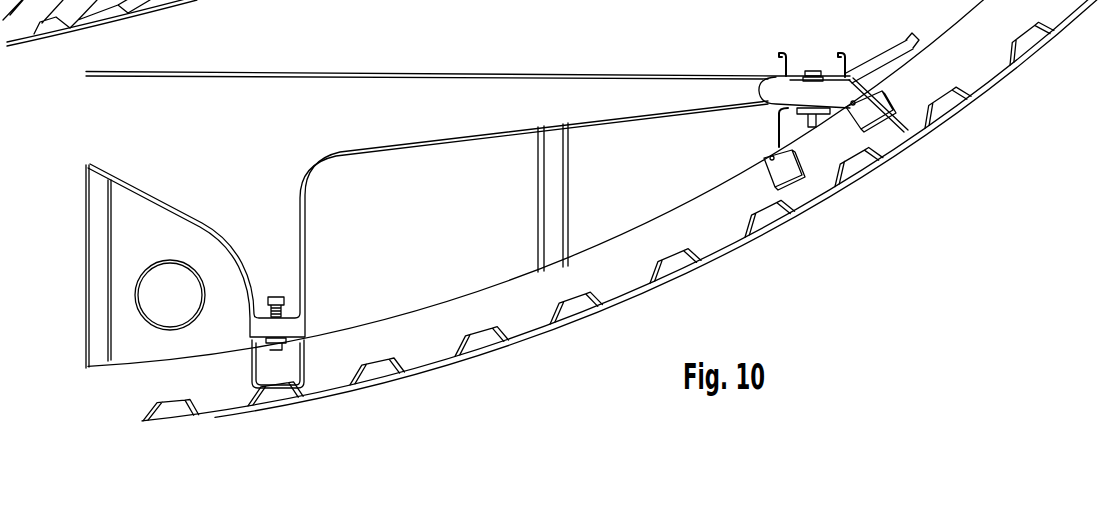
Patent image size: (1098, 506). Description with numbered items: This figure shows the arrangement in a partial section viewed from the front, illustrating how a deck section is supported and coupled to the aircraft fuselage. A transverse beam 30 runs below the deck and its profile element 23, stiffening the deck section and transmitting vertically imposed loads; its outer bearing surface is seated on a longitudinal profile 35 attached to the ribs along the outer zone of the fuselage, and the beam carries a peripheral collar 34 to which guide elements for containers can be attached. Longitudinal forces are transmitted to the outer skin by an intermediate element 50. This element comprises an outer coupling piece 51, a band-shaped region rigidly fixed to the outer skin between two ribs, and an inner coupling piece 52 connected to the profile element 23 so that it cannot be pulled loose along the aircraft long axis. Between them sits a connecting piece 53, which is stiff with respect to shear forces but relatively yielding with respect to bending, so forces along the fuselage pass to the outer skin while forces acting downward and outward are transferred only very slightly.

The transverse beam 30 is at (277, 143).
The profile element 23 is at (788, 58).
The inner coupling piece 52 is at (847, 61).
The intermediate element 50 is at (889, 92).
The peripheral collar 34 is at (920, 42).
The outer coupling piece 51 is at (895, 146).
The connecting piece 53 is at (883, 133).
The longitudinal profile 35 is at (772, 127).